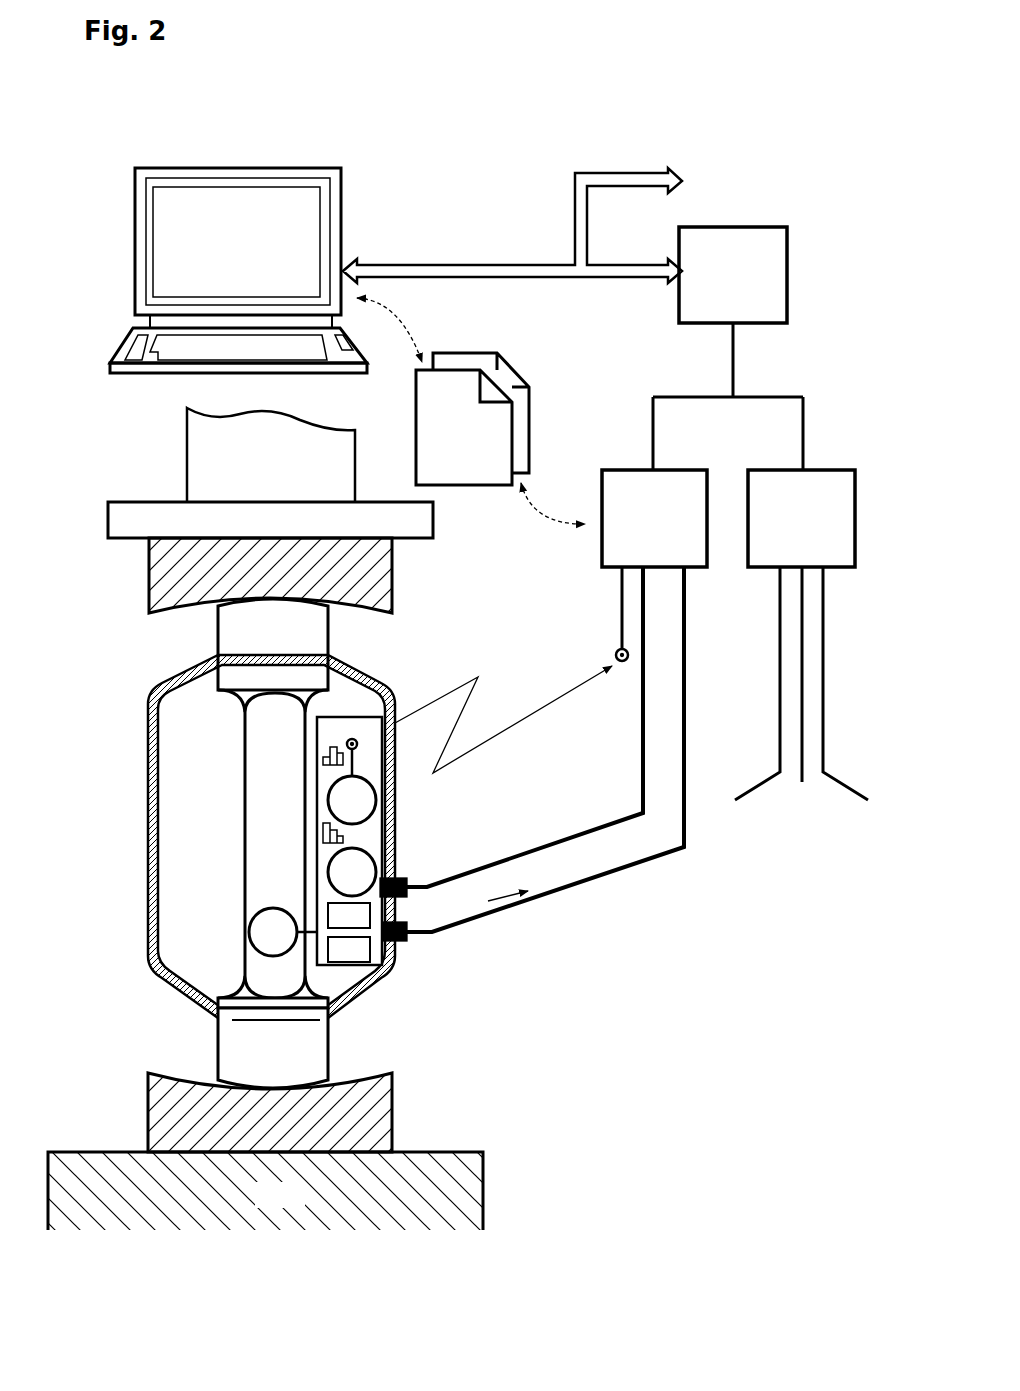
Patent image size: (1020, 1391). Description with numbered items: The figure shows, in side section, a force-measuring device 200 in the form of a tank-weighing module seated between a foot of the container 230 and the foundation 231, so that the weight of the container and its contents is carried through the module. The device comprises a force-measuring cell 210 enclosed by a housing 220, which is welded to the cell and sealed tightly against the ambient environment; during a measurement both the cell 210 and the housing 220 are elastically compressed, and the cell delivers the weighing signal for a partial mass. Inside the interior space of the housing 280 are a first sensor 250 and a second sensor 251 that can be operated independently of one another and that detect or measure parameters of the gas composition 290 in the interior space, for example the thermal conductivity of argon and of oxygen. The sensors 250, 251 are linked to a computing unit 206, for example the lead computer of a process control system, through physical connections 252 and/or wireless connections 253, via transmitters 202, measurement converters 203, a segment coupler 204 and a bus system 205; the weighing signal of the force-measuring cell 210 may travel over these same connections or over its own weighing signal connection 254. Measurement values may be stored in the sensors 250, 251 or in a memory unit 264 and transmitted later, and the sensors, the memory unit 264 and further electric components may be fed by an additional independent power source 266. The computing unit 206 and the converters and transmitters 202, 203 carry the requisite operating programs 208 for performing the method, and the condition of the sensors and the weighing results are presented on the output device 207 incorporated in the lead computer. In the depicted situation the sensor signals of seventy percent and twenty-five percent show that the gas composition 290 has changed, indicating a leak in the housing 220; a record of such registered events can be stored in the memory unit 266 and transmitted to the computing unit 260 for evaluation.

The force-measuring device 200 is at (628, 1064).
The transmitter 202 is at (654, 518).
The measurement converter 203 is at (801, 635).
The segment coupler 204 is at (728, 348).
The bus system 205 is at (492, 265).
The computing unit 206 is at (253, 158).
The output device 207 is at (172, 228).
The operating programs 208 is at (471, 411).
The force-measuring cell 210 is at (273, 782).
The housing 220 is at (153, 872).
The container 230 is at (270, 549).
The foundation 231 is at (265, 1114).
The first sensor 250 is at (376, 799).
The second sensor 251 is at (372, 866).
The physical connection 252 is at (590, 828).
The wireless connection 253 is at (538, 712).
The weighing signal connection 254 is at (613, 873).
The computing unit 260 is at (327, 965).
The memory unit 264 is at (343, 922).
The power source 266 is at (343, 952).
The interior space of the housing 280 is at (200, 953).
The gas composition in the interior space 290 is at (325, 760).